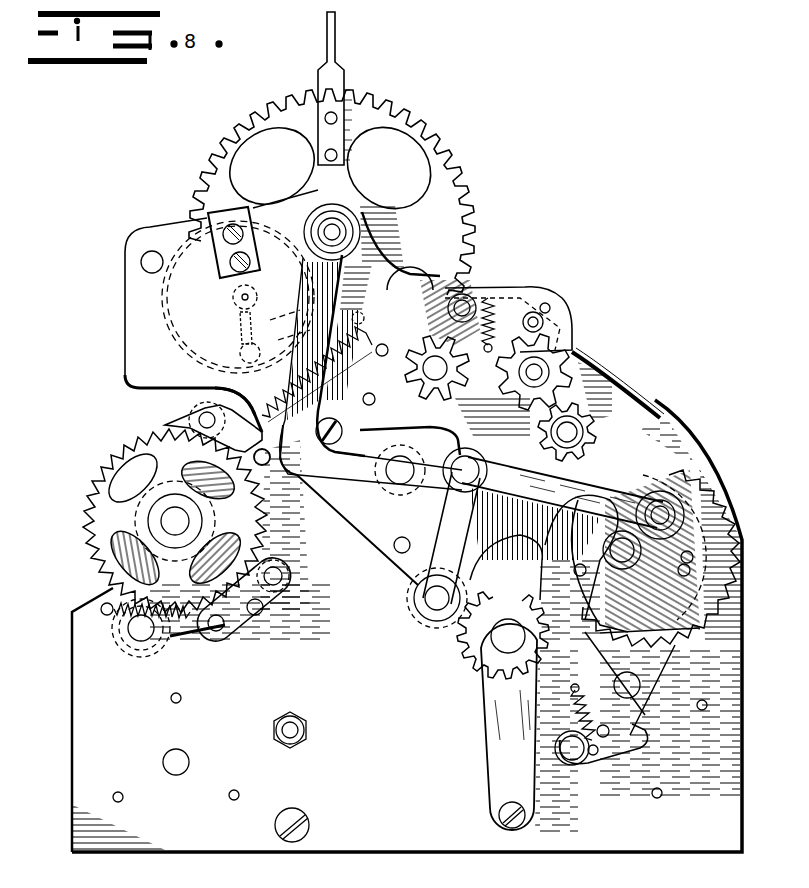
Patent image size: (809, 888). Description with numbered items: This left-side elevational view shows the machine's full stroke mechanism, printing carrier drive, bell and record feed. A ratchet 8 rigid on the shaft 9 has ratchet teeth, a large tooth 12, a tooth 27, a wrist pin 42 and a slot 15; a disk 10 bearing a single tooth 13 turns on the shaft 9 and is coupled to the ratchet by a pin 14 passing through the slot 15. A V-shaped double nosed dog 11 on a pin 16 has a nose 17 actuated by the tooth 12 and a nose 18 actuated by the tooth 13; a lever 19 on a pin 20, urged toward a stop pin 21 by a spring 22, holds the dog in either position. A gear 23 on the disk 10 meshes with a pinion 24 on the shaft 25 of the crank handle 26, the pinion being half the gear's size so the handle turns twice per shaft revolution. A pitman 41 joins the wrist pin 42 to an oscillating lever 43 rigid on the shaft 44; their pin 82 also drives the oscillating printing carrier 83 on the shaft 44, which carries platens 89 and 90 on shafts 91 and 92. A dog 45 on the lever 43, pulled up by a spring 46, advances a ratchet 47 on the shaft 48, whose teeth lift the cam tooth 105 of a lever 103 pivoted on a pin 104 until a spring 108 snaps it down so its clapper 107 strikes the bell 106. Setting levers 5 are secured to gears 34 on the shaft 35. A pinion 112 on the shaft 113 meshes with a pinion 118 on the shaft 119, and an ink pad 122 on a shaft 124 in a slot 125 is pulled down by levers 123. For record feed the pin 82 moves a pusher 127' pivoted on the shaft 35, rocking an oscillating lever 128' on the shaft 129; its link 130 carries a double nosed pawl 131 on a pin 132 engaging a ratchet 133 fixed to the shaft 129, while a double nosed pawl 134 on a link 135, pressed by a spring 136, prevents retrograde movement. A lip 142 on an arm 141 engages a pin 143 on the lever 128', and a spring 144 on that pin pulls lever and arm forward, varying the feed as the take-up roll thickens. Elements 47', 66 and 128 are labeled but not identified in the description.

The lever 5 is at (346, 80).
The gear 34 is at (410, 128).
The shaft 35 is at (355, 222).
The pin 47' is at (406, 239).
The cam tooth 105 is at (455, 290).
The lever 103 is at (436, 340).
The shaft 48 is at (458, 355).
The ratchet 47 is at (501, 272).
The lever 123 is at (518, 288).
The ink pad 122 is at (550, 316).
The pin 104 is at (535, 286).
The slot 125 is at (563, 297).
The shaft 124 is at (568, 317).
The pinion 118 is at (543, 357).
The shaft 119 is at (555, 363).
The lever bar 128 is at (619, 365).
The shaft 113 is at (597, 410).
The pinion 112 is at (598, 420).
The pitman 41 is at (650, 408).
The disk 10 is at (638, 452).
The gear 23 is at (665, 478).
The ratchet 8 is at (670, 510).
The wrist pin 42 is at (700, 500).
The shaft 9 is at (632, 548).
The pin 14 is at (692, 556).
The slot 15 is at (690, 568).
The large tooth 12 is at (687, 620).
The nose 17 is at (680, 640).
The double nosed dog 11 is at (665, 658).
The pin 16 is at (640, 700).
The stop pin 21 is at (640, 737).
The lever 19 is at (622, 752).
The pin 20 is at (580, 762).
The spring 22 is at (583, 700).
The nose 18 is at (537, 685).
The crank handle 26 is at (493, 693).
The shaft 25 is at (475, 655).
The pinion 24 is at (468, 632).
The shaft 44 is at (430, 603).
The oscillating lever 43 is at (423, 580).
The oscillating printing carrier 83 is at (380, 560).
The pin 82 is at (400, 538).
The spring 46 is at (405, 500).
The shaft 91 is at (352, 508).
The pusher 127' is at (371, 384).
The oscillating lever 128' is at (288, 473).
The shaft 92 is at (513, 523).
The platen 90 is at (548, 522).
The tooth 27 is at (613, 627).
The tooth 13 is at (602, 633).
The dog 45 is at (362, 416).
The lip 142 is at (348, 413).
The platen 89 is at (371, 396).
The spring 108 is at (360, 312).
The spring 144 is at (345, 368).
The clapper 107 is at (247, 347).
The bell 106 is at (172, 315).
The hole 66 is at (142, 266).
The pin 143 is at (222, 384).
The link 130 is at (262, 414).
The pin 132 is at (204, 414).
The double nosed pawl 131 is at (172, 419).
The ratchet 133 is at (112, 460).
The shaft 129 is at (160, 520).
The arm 141 is at (122, 547).
The spring 136 is at (125, 622).
The double nosed pawl 134 is at (198, 627).
The link 135 is at (273, 592).